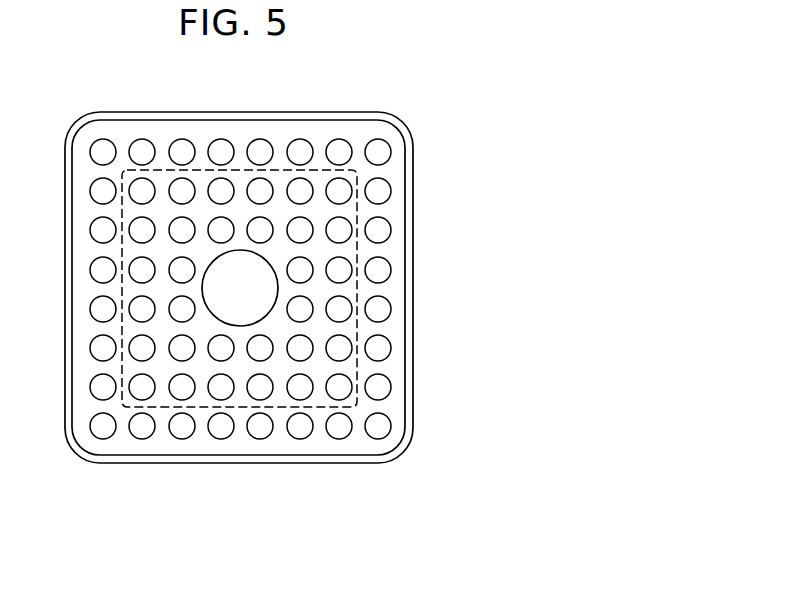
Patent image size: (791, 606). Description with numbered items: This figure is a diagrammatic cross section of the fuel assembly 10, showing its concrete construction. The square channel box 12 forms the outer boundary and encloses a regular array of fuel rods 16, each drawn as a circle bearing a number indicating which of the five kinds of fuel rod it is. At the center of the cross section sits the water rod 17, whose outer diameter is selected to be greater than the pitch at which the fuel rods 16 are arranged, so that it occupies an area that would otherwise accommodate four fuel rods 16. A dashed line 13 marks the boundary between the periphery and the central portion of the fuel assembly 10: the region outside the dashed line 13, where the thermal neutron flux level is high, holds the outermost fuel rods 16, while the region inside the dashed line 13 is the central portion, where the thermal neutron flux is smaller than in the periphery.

The fuel assembly 10 is at (413, 315).
The channel box 12 is at (405, 113).
The dashed line 13 is at (122, 326).
The fuel rods 16 is at (391, 223).
The water rod 17 is at (245, 326).